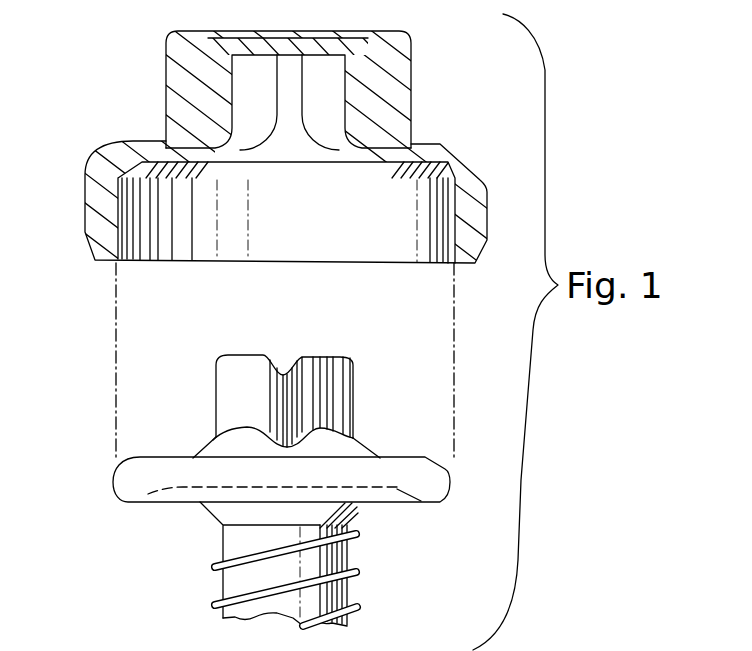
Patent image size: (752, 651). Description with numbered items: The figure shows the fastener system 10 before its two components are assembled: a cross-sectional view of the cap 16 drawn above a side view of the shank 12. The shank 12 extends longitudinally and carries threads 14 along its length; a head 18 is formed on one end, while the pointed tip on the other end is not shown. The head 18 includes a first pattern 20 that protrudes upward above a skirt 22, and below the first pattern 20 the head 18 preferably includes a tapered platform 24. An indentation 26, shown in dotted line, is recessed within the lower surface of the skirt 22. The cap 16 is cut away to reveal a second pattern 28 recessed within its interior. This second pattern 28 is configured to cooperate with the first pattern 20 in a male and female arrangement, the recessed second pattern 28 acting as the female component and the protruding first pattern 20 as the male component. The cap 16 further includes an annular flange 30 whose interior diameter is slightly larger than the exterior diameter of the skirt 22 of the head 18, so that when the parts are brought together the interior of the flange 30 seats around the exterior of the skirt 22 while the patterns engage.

The fastener assembly 10 is at (84, 335).
The shank 12 is at (343, 569).
The threads 14 is at (350, 605).
The cap 16 is at (470, 146).
The head 18 is at (355, 387).
The first pattern 20 is at (345, 372).
The skirt 22 is at (306, 503).
The tapered platform 24 is at (218, 450).
The indentation 26 is at (175, 490).
The second pattern 28 is at (322, 87).
The annular flange 30 is at (476, 222).